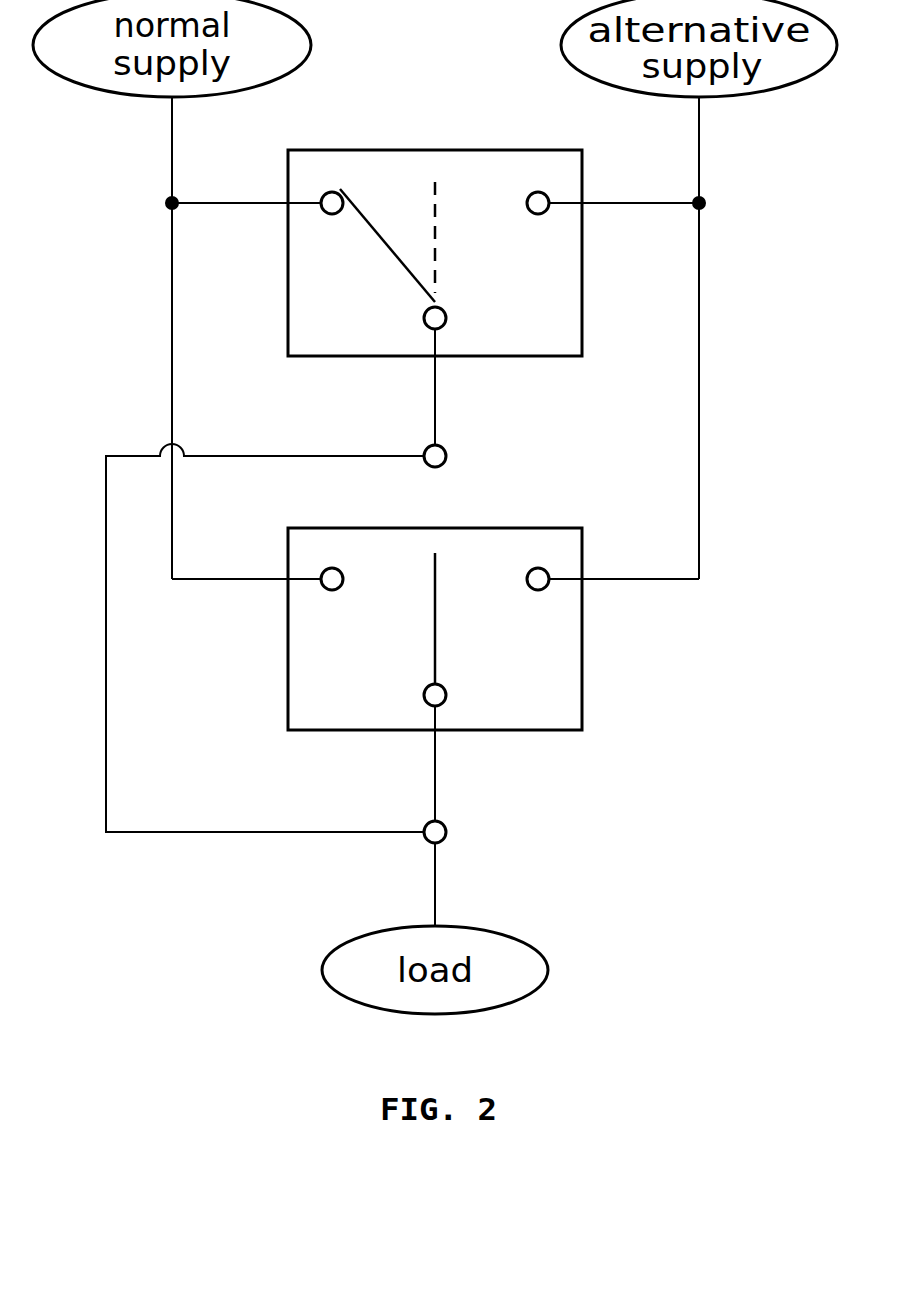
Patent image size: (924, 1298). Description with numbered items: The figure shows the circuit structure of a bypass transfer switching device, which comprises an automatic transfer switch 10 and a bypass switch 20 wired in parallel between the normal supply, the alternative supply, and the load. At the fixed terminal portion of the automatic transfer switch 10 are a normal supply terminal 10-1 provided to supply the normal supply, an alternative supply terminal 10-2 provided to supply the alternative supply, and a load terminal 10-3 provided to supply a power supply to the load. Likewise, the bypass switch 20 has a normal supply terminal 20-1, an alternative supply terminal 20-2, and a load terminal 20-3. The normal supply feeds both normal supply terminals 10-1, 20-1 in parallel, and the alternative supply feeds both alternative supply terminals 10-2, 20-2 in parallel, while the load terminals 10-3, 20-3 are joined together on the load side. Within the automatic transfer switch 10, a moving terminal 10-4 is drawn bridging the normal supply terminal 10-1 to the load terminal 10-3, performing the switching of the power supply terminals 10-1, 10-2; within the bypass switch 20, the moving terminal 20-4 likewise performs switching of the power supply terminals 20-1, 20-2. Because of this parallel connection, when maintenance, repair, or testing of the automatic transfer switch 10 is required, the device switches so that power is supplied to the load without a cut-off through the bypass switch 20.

The automatic transfer switch 10 is at (582, 286).
The normal supply terminal 10-1 is at (330, 191).
The alternative supply terminal 10-2 is at (537, 191).
The load terminal 10-3 is at (430, 331).
The moving terminal 10-4 is at (390, 253).
The bypass switch 20 is at (582, 684).
The normal supply terminal 20-1 is at (331, 567).
The alternative supply terminal 20-2 is at (537, 567).
The load terminal 20-3 is at (430, 707).
The moving terminal 20-4 is at (435, 645).